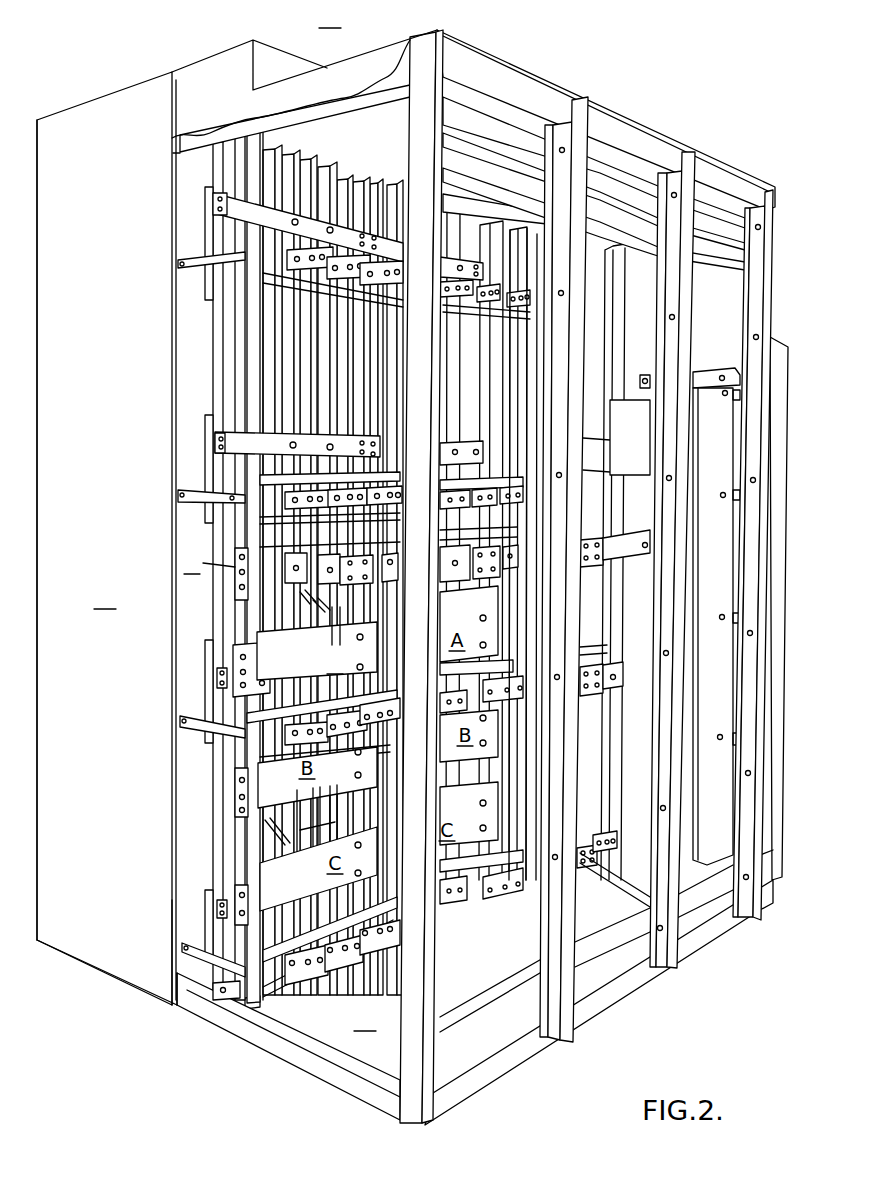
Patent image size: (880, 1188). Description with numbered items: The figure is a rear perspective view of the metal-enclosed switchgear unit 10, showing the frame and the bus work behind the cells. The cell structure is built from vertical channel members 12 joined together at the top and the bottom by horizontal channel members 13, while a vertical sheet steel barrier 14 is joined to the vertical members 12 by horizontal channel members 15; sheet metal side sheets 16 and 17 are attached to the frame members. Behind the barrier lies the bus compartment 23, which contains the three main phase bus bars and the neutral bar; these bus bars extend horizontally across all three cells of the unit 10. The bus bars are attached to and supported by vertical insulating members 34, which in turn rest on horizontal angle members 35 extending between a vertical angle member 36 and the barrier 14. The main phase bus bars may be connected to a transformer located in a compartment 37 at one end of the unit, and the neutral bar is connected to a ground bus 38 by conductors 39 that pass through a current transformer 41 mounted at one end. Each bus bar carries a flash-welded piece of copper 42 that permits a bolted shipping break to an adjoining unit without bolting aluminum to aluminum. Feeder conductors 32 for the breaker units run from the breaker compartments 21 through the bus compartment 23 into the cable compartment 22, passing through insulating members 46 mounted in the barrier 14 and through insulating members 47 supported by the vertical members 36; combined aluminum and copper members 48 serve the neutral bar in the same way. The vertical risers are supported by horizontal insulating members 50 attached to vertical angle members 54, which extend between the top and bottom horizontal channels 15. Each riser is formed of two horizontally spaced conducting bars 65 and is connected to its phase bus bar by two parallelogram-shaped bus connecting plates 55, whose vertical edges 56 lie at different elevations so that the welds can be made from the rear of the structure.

The switchgear unit 10 is at (291, 72).
The vertical channel member 12 is at (760, 272).
The horizontal channel member 13 is at (528, 87).
The vertical sheet steel barrier 14 is at (180, 930).
The horizontal channel member 15 is at (405, 55).
The side sheet 16 is at (115, 103).
The side sheet 17 is at (210, 68).
The breaker compartment 21 is at (77, 530).
The cable compartment 22 is at (277, 1002).
The bus compartment 23 is at (237, 990).
The feeder conductor 32 is at (287, 255).
The vertical insulating member 34 is at (233, 835).
The horizontal angle member 35 is at (199, 258).
The vertical angle member 36 is at (517, 808).
The transformer compartment 37 is at (778, 498).
The ground bus 38 is at (465, 1010).
The conductor 39 is at (710, 372).
The current transformer 41 is at (633, 410).
The piece of copper 42 is at (237, 587).
The insulating member 46 is at (209, 200).
The insulating member 47 is at (277, 280).
The combined aluminum and copper member 48 is at (360, 623).
The horizontal insulating member 50 is at (229, 198).
The vertical angle member 54 is at (220, 368).
The bus connecting plate 55 is at (328, 632).
The vertical edge 56 is at (280, 855).
The conducting bar 65 is at (290, 333).